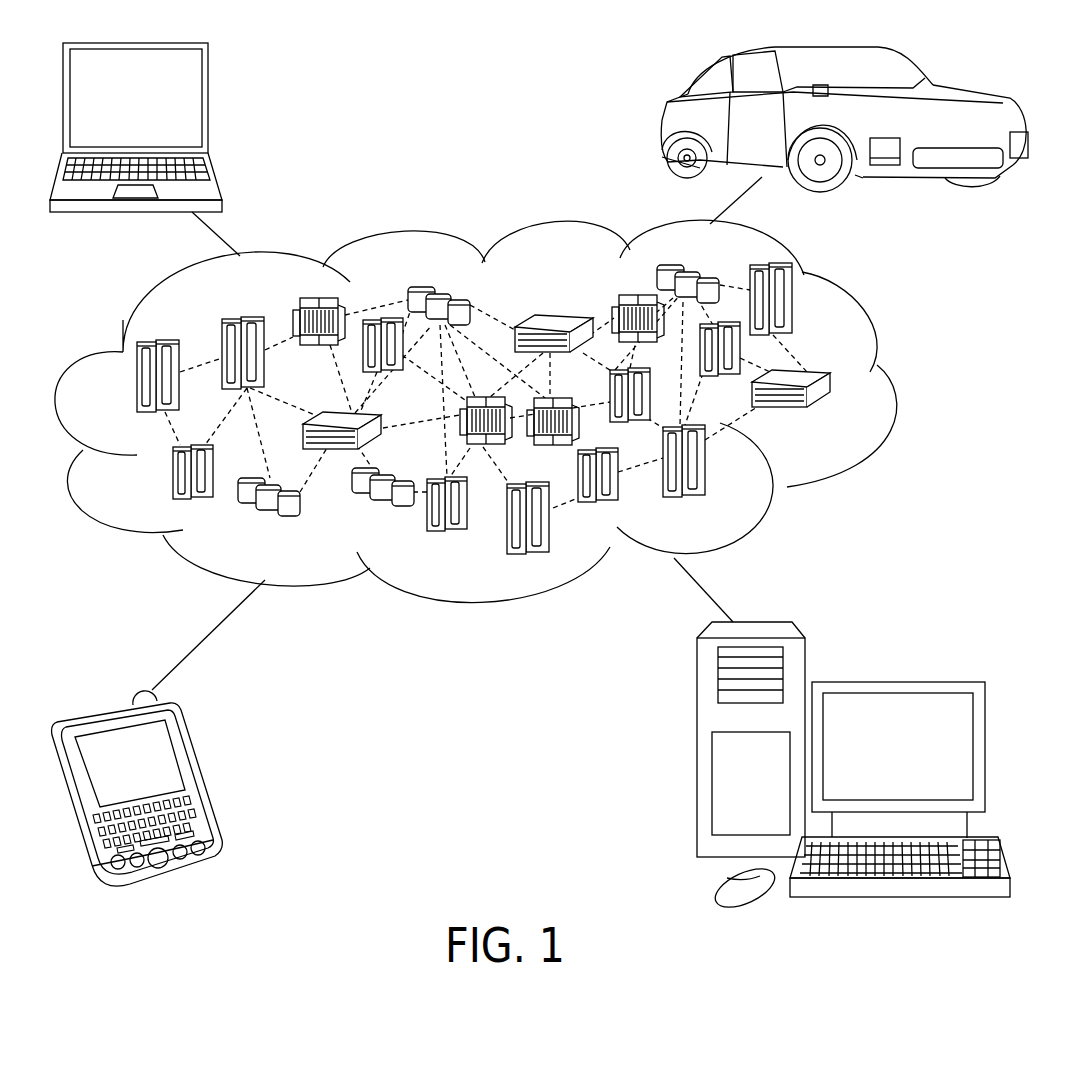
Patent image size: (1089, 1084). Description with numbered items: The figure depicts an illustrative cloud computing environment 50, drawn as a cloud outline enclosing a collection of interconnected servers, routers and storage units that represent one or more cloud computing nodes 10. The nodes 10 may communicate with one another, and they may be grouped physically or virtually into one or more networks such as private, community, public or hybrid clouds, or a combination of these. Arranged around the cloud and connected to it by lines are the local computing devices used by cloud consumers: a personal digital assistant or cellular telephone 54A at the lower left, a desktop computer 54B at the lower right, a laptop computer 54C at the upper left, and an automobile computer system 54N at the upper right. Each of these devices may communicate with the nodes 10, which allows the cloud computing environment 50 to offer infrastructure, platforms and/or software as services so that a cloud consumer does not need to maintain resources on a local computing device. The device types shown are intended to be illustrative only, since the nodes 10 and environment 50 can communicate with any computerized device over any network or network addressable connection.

The cloud computing nodes 10 is at (836, 417).
The cloud computing environment 50 is at (897, 385).
The personal digital assistant or cellular telephone 54A is at (195, 777).
The desktop computer 54B is at (893, 682).
The laptop computer 54C is at (208, 108).
The automobile computer system 54N is at (667, 122).